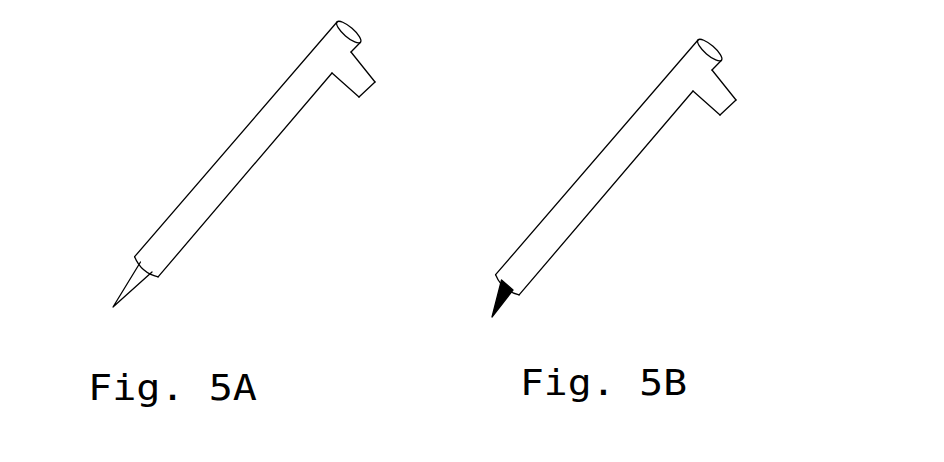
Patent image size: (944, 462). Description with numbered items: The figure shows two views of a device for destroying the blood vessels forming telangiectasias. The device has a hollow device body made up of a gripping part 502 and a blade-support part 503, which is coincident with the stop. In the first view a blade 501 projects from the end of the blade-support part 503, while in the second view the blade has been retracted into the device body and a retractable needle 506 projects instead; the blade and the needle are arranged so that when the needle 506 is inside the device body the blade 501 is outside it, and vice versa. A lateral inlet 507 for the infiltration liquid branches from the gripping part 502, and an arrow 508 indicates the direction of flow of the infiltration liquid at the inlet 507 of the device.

In FIG. 5A, the blade 501 is at (127, 277).
In FIG. 5A, the gripping part 502 is at (245, 177).
In FIG. 5B, the gripping part 502 is at (610, 198).
In FIG. 5A, the blade-support part 503 is at (162, 277).
In FIG. 5B, the blade-support part 503 is at (525, 297).
In FIG. 5B, the retractable needle 506 is at (495, 293).
In FIG. 5A, the inlet 507 is at (369, 67).
In FIG. 5B, the inlet 507 is at (730, 83).
In FIG. 5A, the arrow 508 is at (373, 95).
In FIG. 5B, the arrow 508 is at (735, 110).